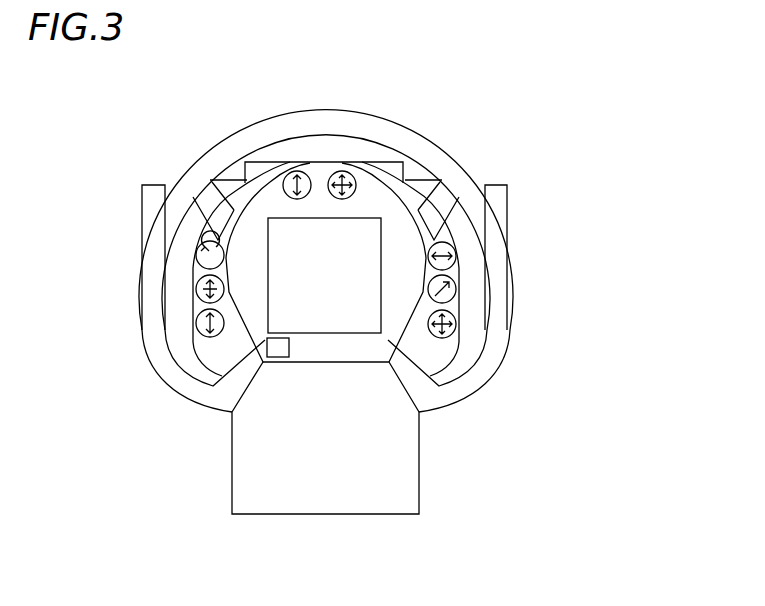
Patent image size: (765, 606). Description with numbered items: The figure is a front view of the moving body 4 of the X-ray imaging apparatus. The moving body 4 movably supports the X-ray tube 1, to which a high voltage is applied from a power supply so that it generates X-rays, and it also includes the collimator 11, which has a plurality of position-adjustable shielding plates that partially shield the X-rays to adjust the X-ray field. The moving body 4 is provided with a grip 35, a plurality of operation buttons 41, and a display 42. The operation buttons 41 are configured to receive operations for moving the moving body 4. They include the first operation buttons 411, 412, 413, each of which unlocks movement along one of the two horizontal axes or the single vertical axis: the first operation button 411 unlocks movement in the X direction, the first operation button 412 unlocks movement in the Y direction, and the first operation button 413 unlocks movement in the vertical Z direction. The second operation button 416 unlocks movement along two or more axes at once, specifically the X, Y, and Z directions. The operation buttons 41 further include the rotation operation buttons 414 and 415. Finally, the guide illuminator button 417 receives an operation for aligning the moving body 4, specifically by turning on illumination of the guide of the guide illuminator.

The X-ray tube 1 is at (142, 192).
The moving body 4 is at (341, 289).
The collimator 11 is at (421, 454).
The grip 35 is at (306, 107).
The operation buttons 41 is at (543, 295).
The display 42 is at (332, 320).
The first operation button 411 is at (457, 245).
The first operation button 412 is at (457, 278).
The first operation button 413 is at (195, 316).
The rotation operation button 414 is at (195, 283).
The rotation operation button 415 is at (195, 247).
The second operation button 416 is at (457, 318).
The guide illuminator button 417 is at (262, 345).